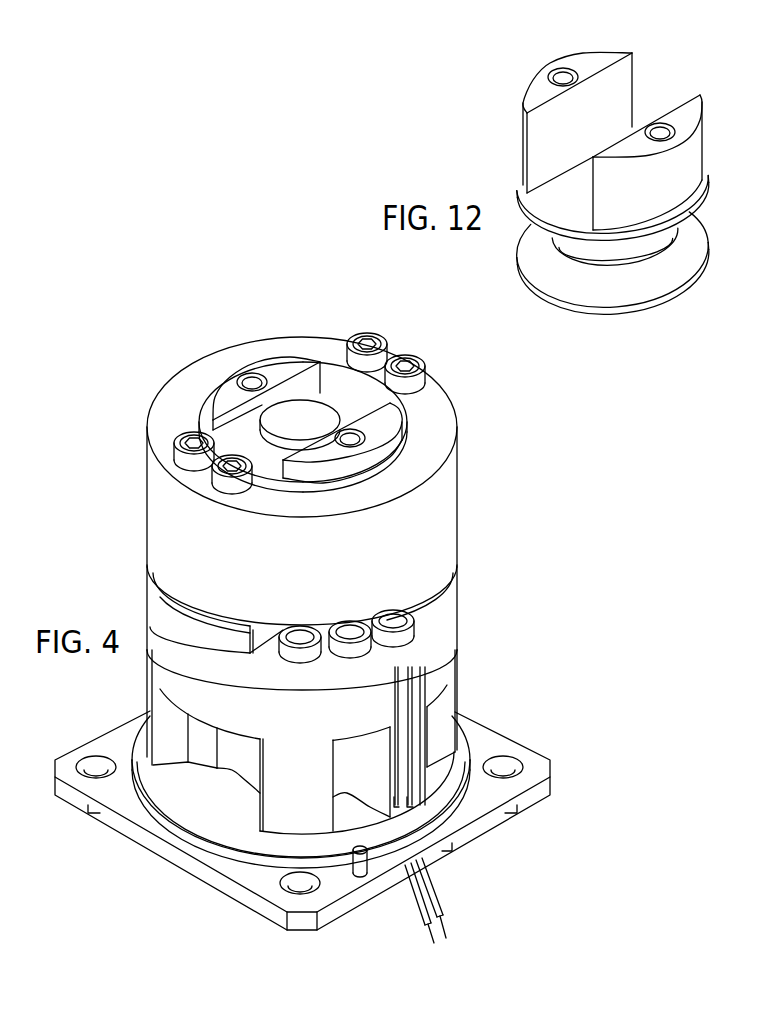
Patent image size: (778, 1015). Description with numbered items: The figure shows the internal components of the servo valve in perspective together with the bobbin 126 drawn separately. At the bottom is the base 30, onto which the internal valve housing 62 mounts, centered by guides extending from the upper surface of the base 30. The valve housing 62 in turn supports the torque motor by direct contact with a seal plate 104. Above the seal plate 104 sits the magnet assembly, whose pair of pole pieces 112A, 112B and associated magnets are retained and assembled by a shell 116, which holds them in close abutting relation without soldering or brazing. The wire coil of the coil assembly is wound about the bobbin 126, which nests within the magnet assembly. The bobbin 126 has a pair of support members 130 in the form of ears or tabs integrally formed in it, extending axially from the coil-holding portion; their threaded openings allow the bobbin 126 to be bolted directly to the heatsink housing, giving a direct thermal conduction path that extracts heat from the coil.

In FIG. 4, the support members 130 is at (283, 370).
In FIG. 12, the support members 130 is at (688, 135).
In FIG. 4, the pole piece 112A is at (250, 447).
In FIG. 4, the pole piece 112B is at (347, 397).
In FIG. 4, the shell 116 is at (447, 510).
In FIG. 4, the seal plate 104 is at (447, 613).
In FIG. 4, the internal valve housing 62 is at (447, 662).
In FIG. 4, the base 30 is at (493, 745).
In FIG. 12, the bobbin 126 is at (613, 198).